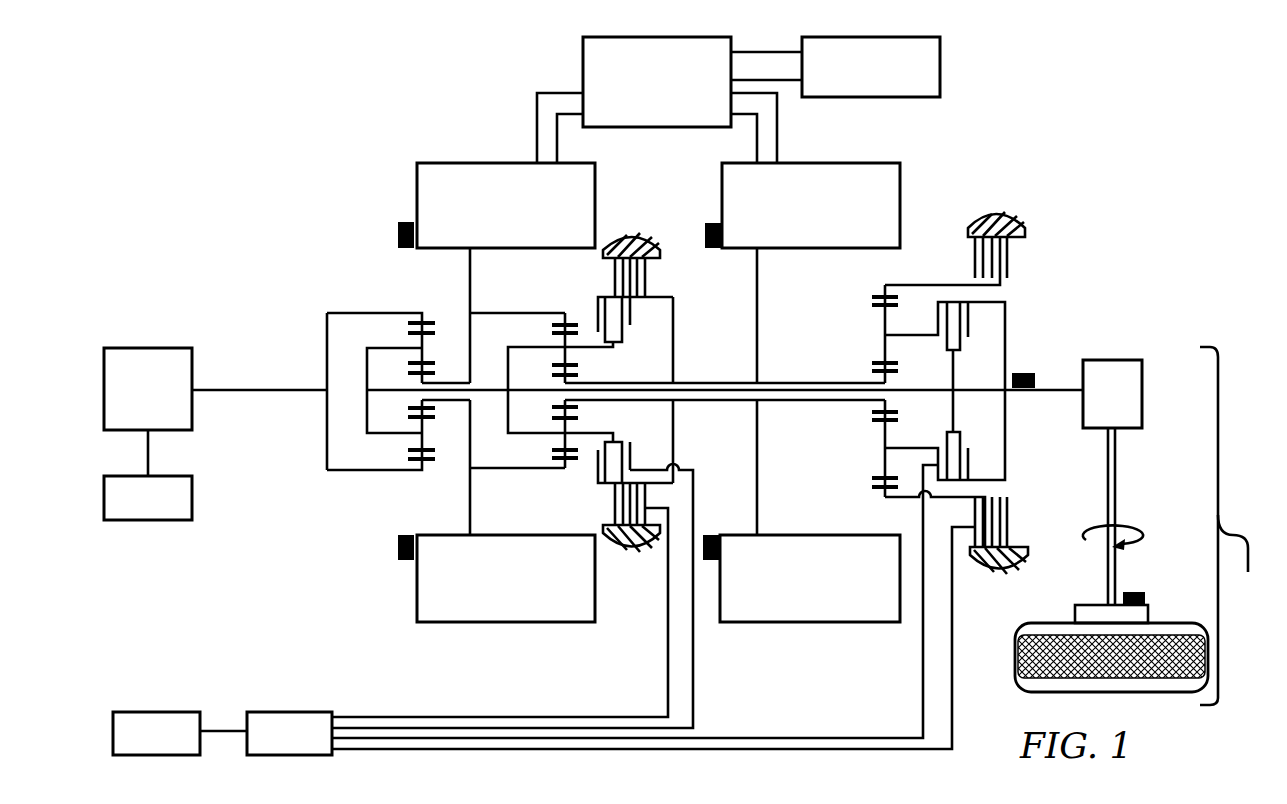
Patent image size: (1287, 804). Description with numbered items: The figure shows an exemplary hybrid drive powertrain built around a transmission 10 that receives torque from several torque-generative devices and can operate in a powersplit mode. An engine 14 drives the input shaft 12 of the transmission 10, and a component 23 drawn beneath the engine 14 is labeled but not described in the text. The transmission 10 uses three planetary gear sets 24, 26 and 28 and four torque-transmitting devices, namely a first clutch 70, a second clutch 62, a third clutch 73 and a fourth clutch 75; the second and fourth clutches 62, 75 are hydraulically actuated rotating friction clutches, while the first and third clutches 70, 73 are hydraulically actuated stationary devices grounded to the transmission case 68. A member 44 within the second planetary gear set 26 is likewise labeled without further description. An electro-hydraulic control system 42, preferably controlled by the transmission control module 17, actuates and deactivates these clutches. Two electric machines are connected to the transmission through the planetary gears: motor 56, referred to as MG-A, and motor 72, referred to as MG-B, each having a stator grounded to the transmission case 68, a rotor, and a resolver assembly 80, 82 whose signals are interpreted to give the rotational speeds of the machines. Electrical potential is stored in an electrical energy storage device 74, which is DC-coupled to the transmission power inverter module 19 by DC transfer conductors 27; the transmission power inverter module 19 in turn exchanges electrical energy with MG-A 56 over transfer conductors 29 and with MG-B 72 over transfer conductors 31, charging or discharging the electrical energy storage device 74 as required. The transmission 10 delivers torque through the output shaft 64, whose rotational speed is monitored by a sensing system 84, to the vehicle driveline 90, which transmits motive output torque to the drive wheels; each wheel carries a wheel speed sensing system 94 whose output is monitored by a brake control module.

The transmission 10 is at (378, 130).
The input shaft 12 is at (300, 388).
The engine 14 is at (156, 348).
The transmission control module 17 is at (148, 712).
The transmission power inverter module 19 is at (583, 52).
The fuel tank 23 is at (190, 516).
The planetary gear set 24 is at (411, 306).
The planetary gear set 26 is at (558, 306).
The DC transfer conductors 27 is at (746, 50).
The planetary gear set 28 is at (874, 296).
The transfer conductors 29 is at (537, 120).
The transfer conductors 31 is at (777, 120).
The electro-hydraulic control system 42 is at (262, 712).
The clutch hub member 44 is at (508, 418).
The motor MG-A 56 is at (417, 187).
The clutch C2 62 is at (980, 330).
The output shaft 64 is at (1057, 388).
The transmission case 68 is at (633, 250).
The clutch C1 70 is at (968, 255).
The motor MG-B 72 is at (900, 185).
The clutch C3 73 is at (650, 284).
The electrical energy storage device 74 is at (940, 56).
The clutch C4 75 is at (632, 324).
The resolver assembly 80 is at (398, 236).
The resolver assembly 82 is at (708, 223).
The sensing system 84 is at (1022, 372).
The driveline 90 is at (1140, 526).
The wheel speed sensing system 94 is at (1135, 592).